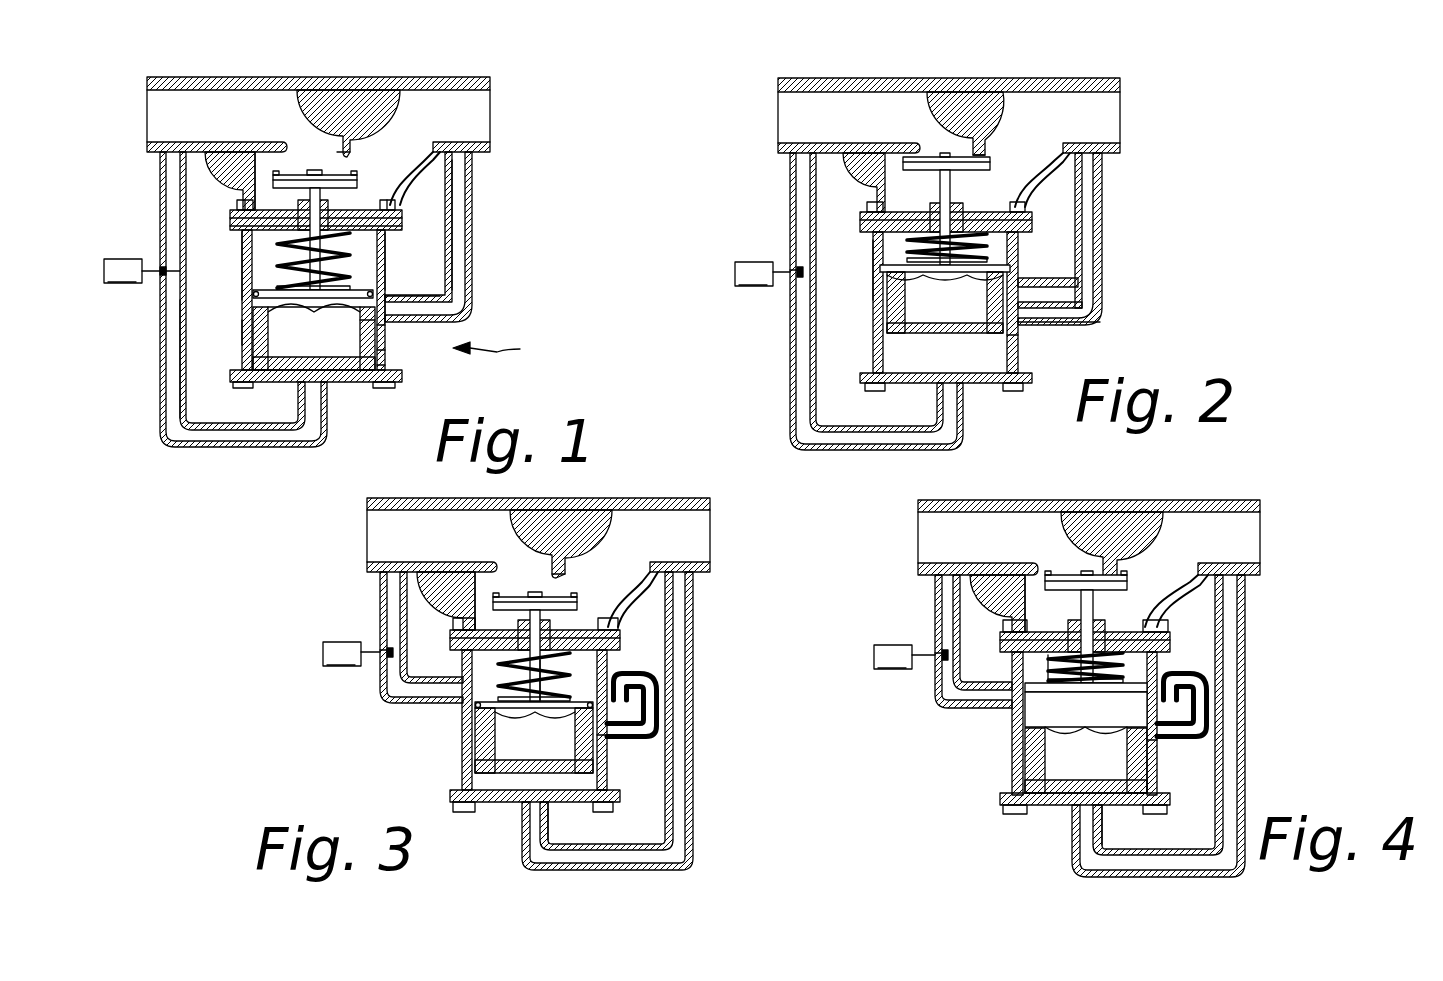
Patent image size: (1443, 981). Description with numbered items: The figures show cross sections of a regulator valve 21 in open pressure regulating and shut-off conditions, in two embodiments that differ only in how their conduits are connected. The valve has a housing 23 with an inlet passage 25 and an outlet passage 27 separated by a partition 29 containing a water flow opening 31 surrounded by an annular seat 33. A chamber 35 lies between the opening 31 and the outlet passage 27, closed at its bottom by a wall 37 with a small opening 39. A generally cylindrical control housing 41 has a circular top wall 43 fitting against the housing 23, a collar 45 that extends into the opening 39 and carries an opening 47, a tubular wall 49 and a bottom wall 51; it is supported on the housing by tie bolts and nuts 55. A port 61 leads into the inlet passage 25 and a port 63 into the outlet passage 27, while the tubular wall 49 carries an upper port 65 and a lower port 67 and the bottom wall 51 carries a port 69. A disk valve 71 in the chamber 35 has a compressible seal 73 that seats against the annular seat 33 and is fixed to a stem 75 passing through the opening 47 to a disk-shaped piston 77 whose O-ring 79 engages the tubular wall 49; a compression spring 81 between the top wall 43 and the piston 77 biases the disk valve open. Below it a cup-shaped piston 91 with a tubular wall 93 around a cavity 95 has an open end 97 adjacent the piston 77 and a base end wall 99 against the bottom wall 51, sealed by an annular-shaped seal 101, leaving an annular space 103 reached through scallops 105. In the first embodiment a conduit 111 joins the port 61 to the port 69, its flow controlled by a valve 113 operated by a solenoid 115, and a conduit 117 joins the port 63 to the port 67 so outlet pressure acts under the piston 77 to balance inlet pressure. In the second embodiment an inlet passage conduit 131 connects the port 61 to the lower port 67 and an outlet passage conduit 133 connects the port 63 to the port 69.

In FIG. 1, the regulator valve 21 is at (328, 326).
In FIG. 2, the regulator valve 21 is at (1009, 288).
In FIG. 3, the regulator valve 21 is at (515, 719).
In FIG. 4, the regulator valve 21 is at (1047, 709).
In FIG. 1, the housing 23 is at (347, 95).
In FIG. 2, the housing 23 is at (949, 116).
In FIG. 3, the housing 23 is at (562, 510).
In FIG. 4, the housing 23 is at (1113, 512).
In FIG. 1, the inlet passage 25 is at (165, 115).
In FIG. 2, the inlet passage 25 is at (798, 118).
In FIG. 3, the inlet passage 25 is at (387, 540).
In FIG. 4, the inlet passage 25 is at (940, 540).
In FIG. 1, the outlet passage 27 is at (478, 122).
In FIG. 2, the outlet passage 27 is at (1105, 125).
In FIG. 3, the outlet passage 27 is at (700, 547).
In FIG. 4, the outlet passage 27 is at (1250, 550).
In FIG. 1, the partition 29 is at (240, 150).
In FIG. 3, the partition 29 is at (460, 570).
In FIG. 4, the partition 29 is at (1010, 570).
In FIG. 1, the water flow opening 31 is at (293, 160).
In FIG. 3, the water flow opening 31 is at (508, 580).
In FIG. 4, the water flow opening 31 is at (1070, 578).
In FIG. 1, the annular seat 33 is at (350, 165).
In FIG. 2, the annular seat 33 is at (968, 172).
In FIG. 3, the annular seat 33 is at (510, 590).
In FIG. 4, the annular seat 33 is at (1062, 590).
In FIG. 1, the chamber 35 is at (240, 204).
In FIG. 1, the wall 37 is at (390, 240).
In FIG. 1, the opening 39 is at (390, 210).
In FIG. 1, the control housing 41 is at (500, 348).
In FIG. 1, the top wall 43 is at (243, 222).
In FIG. 1, the collar 45 is at (390, 198).
In FIG. 1, the opening 47 is at (245, 250).
In FIG. 1, the tubular wall 49 is at (390, 352).
In FIG. 2, the tubular wall 49 is at (1020, 290).
In FIG. 3, the tubular wall 49 is at (607, 792).
In FIG. 1, the bottom wall 51 is at (200, 445).
In FIG. 3, the bottom wall 51 is at (565, 812).
In FIG. 4, the bottom wall 51 is at (1115, 812).
In FIG. 1, the tie bolts and nuts 55 is at (400, 297).
In FIG. 1, the port 61 is at (162, 160).
In FIG. 2, the port 61 is at (790, 162).
In FIG. 3, the port 61 is at (385, 580).
In FIG. 4, the port 61 is at (937, 580).
In FIG. 1, the port 63 is at (470, 160).
In FIG. 2, the port 63 is at (1090, 160).
In FIG. 3, the port 63 is at (690, 585).
In FIG. 4, the port 63 is at (1240, 585).
In FIG. 1, the upper port 65 is at (388, 268).
In FIG. 2, the upper port 65 is at (1018, 272).
In FIG. 3, the upper port 65 is at (607, 678).
In FIG. 4, the upper port 65 is at (1157, 680).
In FIG. 1, the lower port 67 is at (390, 333).
In FIG. 2, the lower port 67 is at (1020, 335).
In FIG. 3, the lower port 67 is at (607, 735).
In FIG. 4, the lower port 67 is at (1157, 740).
In FIG. 1, the port 69 is at (300, 396).
In FIG. 2, the port 69 is at (935, 395).
In FIG. 3, the port 69 is at (520, 808).
In FIG. 4, the port 69 is at (1075, 812).
In FIG. 1, the disk valve 71 is at (392, 172).
In FIG. 2, the disk valve 71 is at (985, 180).
In FIG. 3, the disk valve 71 is at (605, 598).
In FIG. 4, the disk valve 71 is at (1180, 582).
In FIG. 1, the compressible seal 73 is at (320, 172).
In FIG. 2, the compressible seal 73 is at (946, 161).
In FIG. 3, the compressible seal 73 is at (535, 601).
In FIG. 4, the compressible seal 73 is at (1086, 580).
In FIG. 1, the stem 75 is at (330, 256).
In FIG. 2, the stem 75 is at (940, 192).
In FIG. 3, the stem 75 is at (534, 656).
In FIG. 4, the stem 75 is at (1085, 636).
In FIG. 1, the piston 77 is at (256, 300).
In FIG. 2, the piston 77 is at (948, 290).
In FIG. 3, the piston 77 is at (470, 722).
In FIG. 4, the piston 77 is at (1045, 692).
In FIG. 1, the O-ring 79 is at (462, 313).
In FIG. 2, the O-ring 79 is at (876, 268).
In FIG. 1, the compression spring 81 is at (250, 280).
In FIG. 2, the compression spring 81 is at (873, 240).
In FIG. 3, the compression spring 81 is at (540, 687).
In FIG. 4, the compression spring 81 is at (1050, 670).
In FIG. 1, the cup-shaped piston 91 is at (268, 318).
In FIG. 2, the cup-shaped piston 91 is at (890, 310).
In FIG. 3, the cup-shaped piston 91 is at (462, 730).
In FIG. 4, the cup-shaped piston 91 is at (1025, 762).
In FIG. 1, the tubular wall 93 is at (262, 352).
In FIG. 1, the cavity 95 is at (258, 365).
In FIG. 1, the open end 97 is at (337, 300).
In FIG. 1, the base end wall 99 is at (312, 302).
In FIG. 1, the annular-shaped seal 101 is at (385, 370).
In FIG. 2, the annular-shaped seal 101 is at (885, 340).
In FIG. 4, the annular-shaped seal 101 is at (1010, 800).
In FIG. 1, the annular space 103 is at (372, 378).
In FIG. 3, the annular space 103 is at (575, 745).
In FIG. 1, the scallops 105 is at (314, 333).
In FIG. 1, the conduit 111 is at (186, 432).
In FIG. 2, the conduit 111 is at (790, 372).
In FIG. 1, the valve 113 is at (168, 282).
In FIG. 2, the valve 113 is at (790, 295).
In FIG. 3, the valve 113 is at (380, 680).
In FIG. 4, the valve 113 is at (935, 680).
In FIG. 1, the solenoid 115 is at (132, 271).
In FIG. 2, the solenoid 115 is at (767, 274).
In FIG. 3, the solenoid 115 is at (356, 654).
In FIG. 4, the solenoid 115 is at (909, 657).
In FIG. 1, the conduit 117 is at (458, 222).
In FIG. 2, the conduit 117 is at (1090, 322).
In FIG. 3, the inlet passage conduit 131 is at (385, 632).
In FIG. 4, the inlet passage conduit 131 is at (950, 715).
In FIG. 3, the outlet passage conduit 133 is at (690, 662).
In FIG. 4, the outlet passage conduit 133 is at (1245, 662).